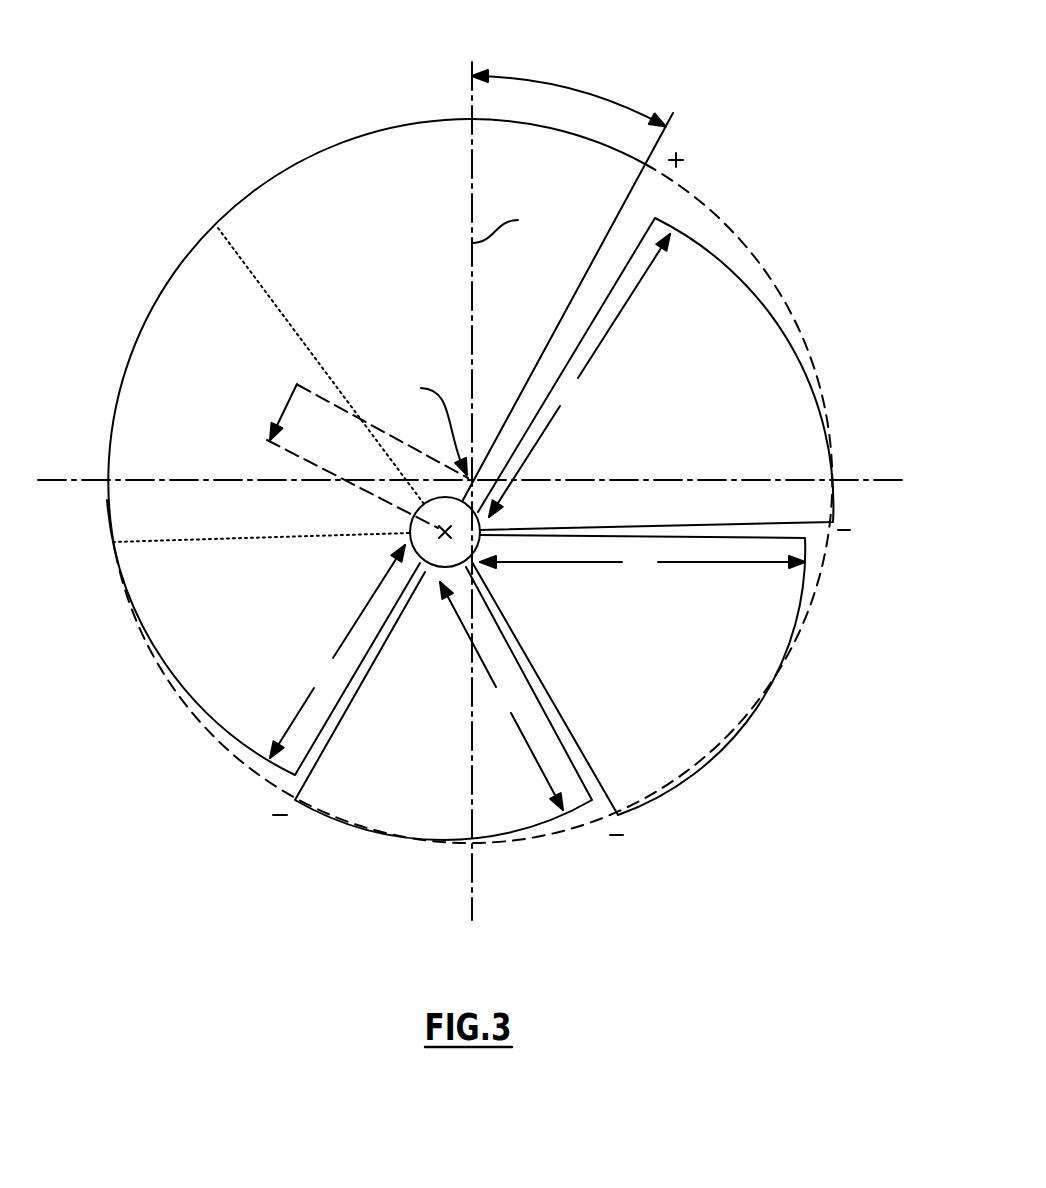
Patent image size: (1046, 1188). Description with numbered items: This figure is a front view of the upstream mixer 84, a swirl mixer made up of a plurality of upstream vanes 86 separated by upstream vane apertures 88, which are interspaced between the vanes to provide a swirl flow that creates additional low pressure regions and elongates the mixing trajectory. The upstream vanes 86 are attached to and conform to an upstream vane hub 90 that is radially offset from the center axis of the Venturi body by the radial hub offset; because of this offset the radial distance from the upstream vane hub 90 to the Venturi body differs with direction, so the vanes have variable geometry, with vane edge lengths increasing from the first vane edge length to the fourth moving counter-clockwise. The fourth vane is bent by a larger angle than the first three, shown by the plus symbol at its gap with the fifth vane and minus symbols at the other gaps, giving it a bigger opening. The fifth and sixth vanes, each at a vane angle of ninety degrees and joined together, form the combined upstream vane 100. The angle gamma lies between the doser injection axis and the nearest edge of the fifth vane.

The upstream mixer 84 is at (471, 474).
The upstream vanes 86 is at (413, 220).
The upstream vane apertures 88 is at (646, 201).
The upstream vane hub 90 is at (464, 545).
The combined upstream vane 100 is at (291, 160).